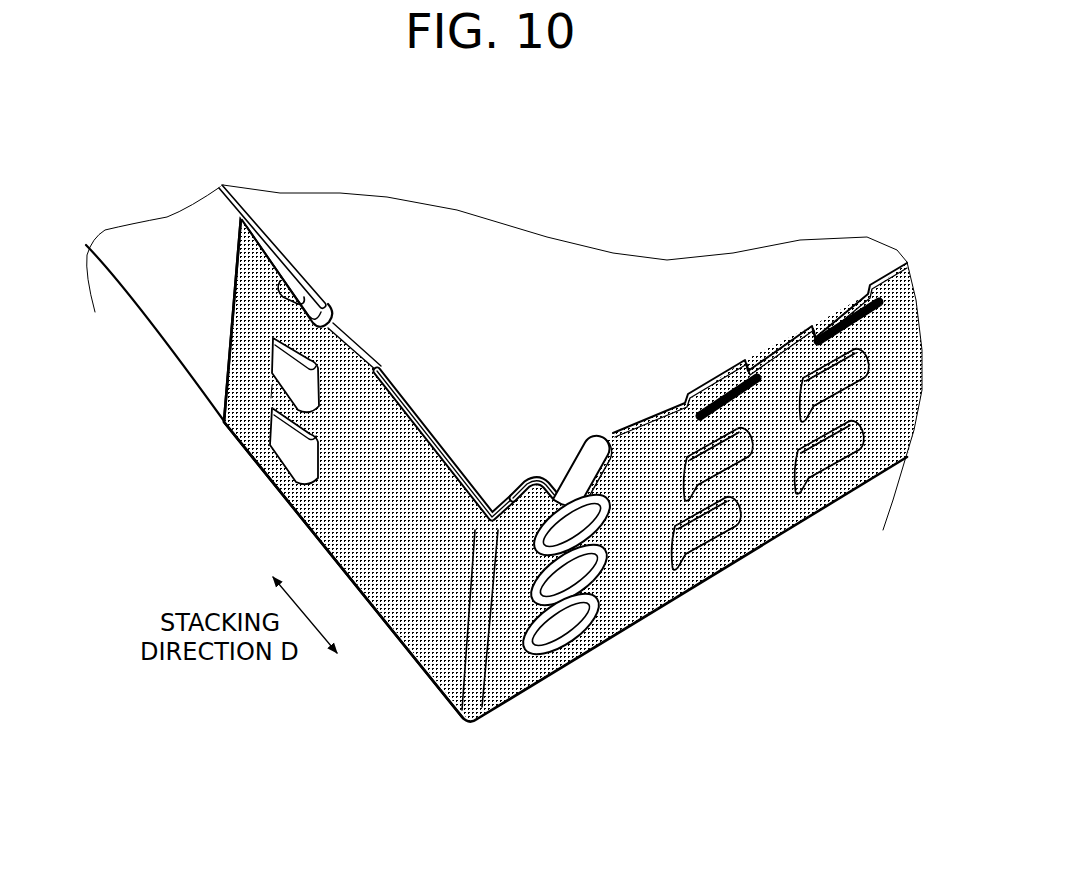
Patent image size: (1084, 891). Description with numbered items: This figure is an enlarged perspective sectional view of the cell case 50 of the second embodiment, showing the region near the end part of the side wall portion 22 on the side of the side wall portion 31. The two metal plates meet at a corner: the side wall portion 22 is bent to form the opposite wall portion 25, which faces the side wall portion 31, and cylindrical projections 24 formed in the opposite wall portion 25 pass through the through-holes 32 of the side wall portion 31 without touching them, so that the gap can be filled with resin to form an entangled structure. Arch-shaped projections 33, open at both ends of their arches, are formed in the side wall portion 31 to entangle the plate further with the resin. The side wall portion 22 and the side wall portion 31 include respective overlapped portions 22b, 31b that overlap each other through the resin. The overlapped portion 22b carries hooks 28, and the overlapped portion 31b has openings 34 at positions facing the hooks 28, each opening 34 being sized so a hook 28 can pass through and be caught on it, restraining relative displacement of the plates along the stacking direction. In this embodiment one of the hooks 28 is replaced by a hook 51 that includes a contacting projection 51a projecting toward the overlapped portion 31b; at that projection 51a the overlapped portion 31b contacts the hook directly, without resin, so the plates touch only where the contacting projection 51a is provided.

The side wall portion 22 is at (287, 210).
The overlapped portion 22b is at (403, 390).
The projection 24 is at (578, 480).
The opposite wall portion 25 is at (528, 483).
The hook 28 is at (284, 457).
The side wall portion 31 is at (647, 664).
The overlapped portion 31b is at (413, 613).
The through-hole 32 is at (540, 657).
The projection 33 is at (715, 554).
The opening 34 is at (273, 343).
The cell case 50 is at (703, 156).
The hook 51 is at (328, 280).
The contacting projection 51a is at (293, 262).